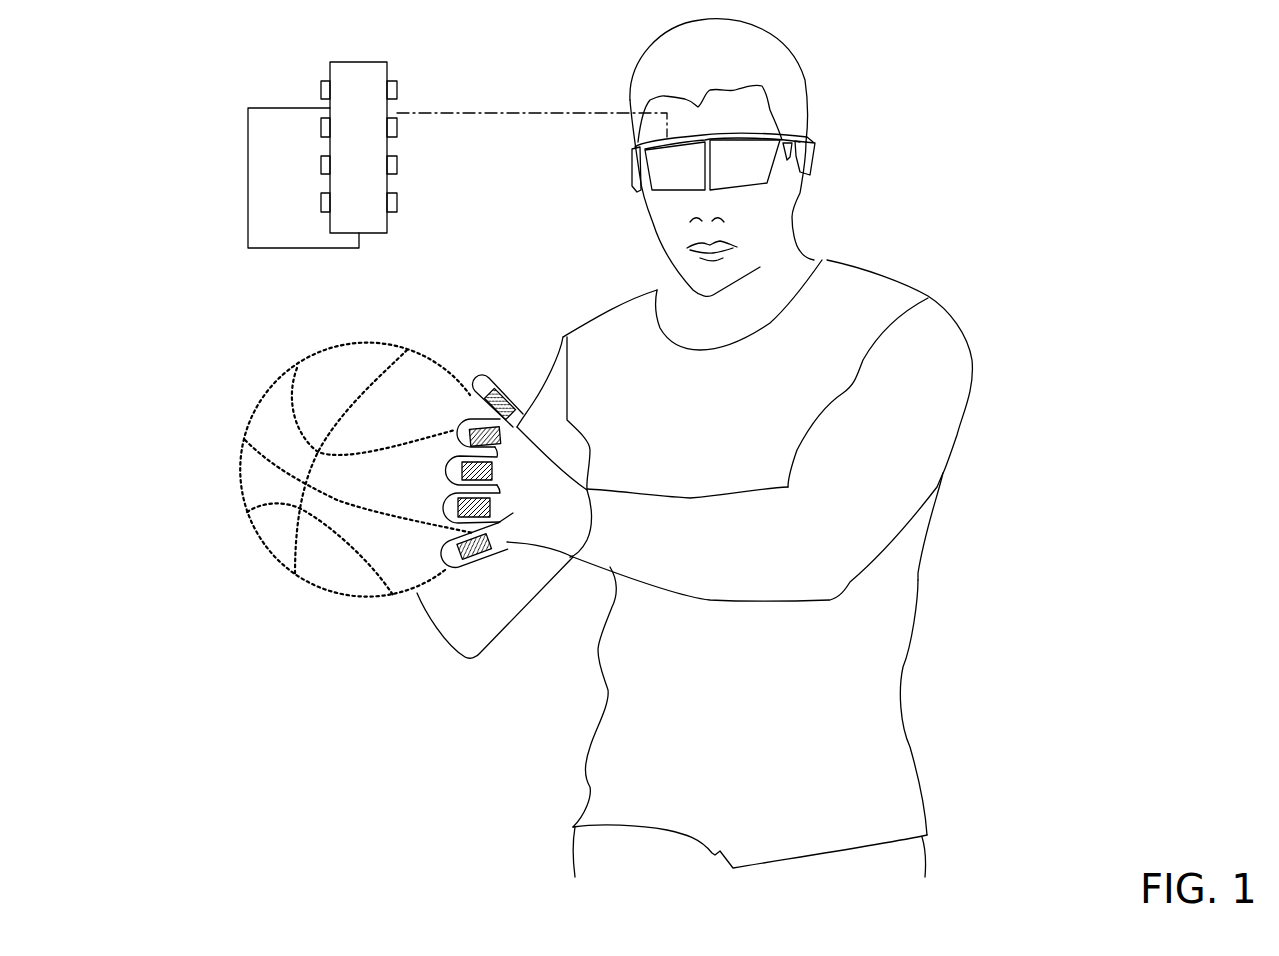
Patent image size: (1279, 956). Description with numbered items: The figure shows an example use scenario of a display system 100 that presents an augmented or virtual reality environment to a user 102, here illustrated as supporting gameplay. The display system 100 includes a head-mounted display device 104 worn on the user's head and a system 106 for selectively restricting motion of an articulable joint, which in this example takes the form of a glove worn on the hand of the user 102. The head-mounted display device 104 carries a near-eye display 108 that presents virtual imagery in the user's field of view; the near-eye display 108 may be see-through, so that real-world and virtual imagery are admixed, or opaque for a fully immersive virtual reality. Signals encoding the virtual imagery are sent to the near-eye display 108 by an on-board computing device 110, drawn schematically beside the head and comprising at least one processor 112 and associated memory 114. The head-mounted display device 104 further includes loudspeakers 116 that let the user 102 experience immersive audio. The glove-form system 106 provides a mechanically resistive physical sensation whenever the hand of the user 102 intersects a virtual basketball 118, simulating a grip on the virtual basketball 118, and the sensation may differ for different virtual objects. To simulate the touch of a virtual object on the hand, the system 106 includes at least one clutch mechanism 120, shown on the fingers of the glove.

The display system 100 is at (176, 322).
The user 102 is at (837, 794).
The head-mounted display (HMD) device 104 is at (608, 162).
The system for selectively restricting motion of an articulable joint 106 is at (580, 517).
The near-eye display 108 is at (692, 185).
The on-board computing device 110 is at (250, 72).
The processor 112 is at (290, 249).
The memory 114 is at (358, 62).
The loudspeakers 116 is at (820, 150).
The virtual basketball 118 is at (405, 553).
The clutch mechanism 120 is at (472, 560).